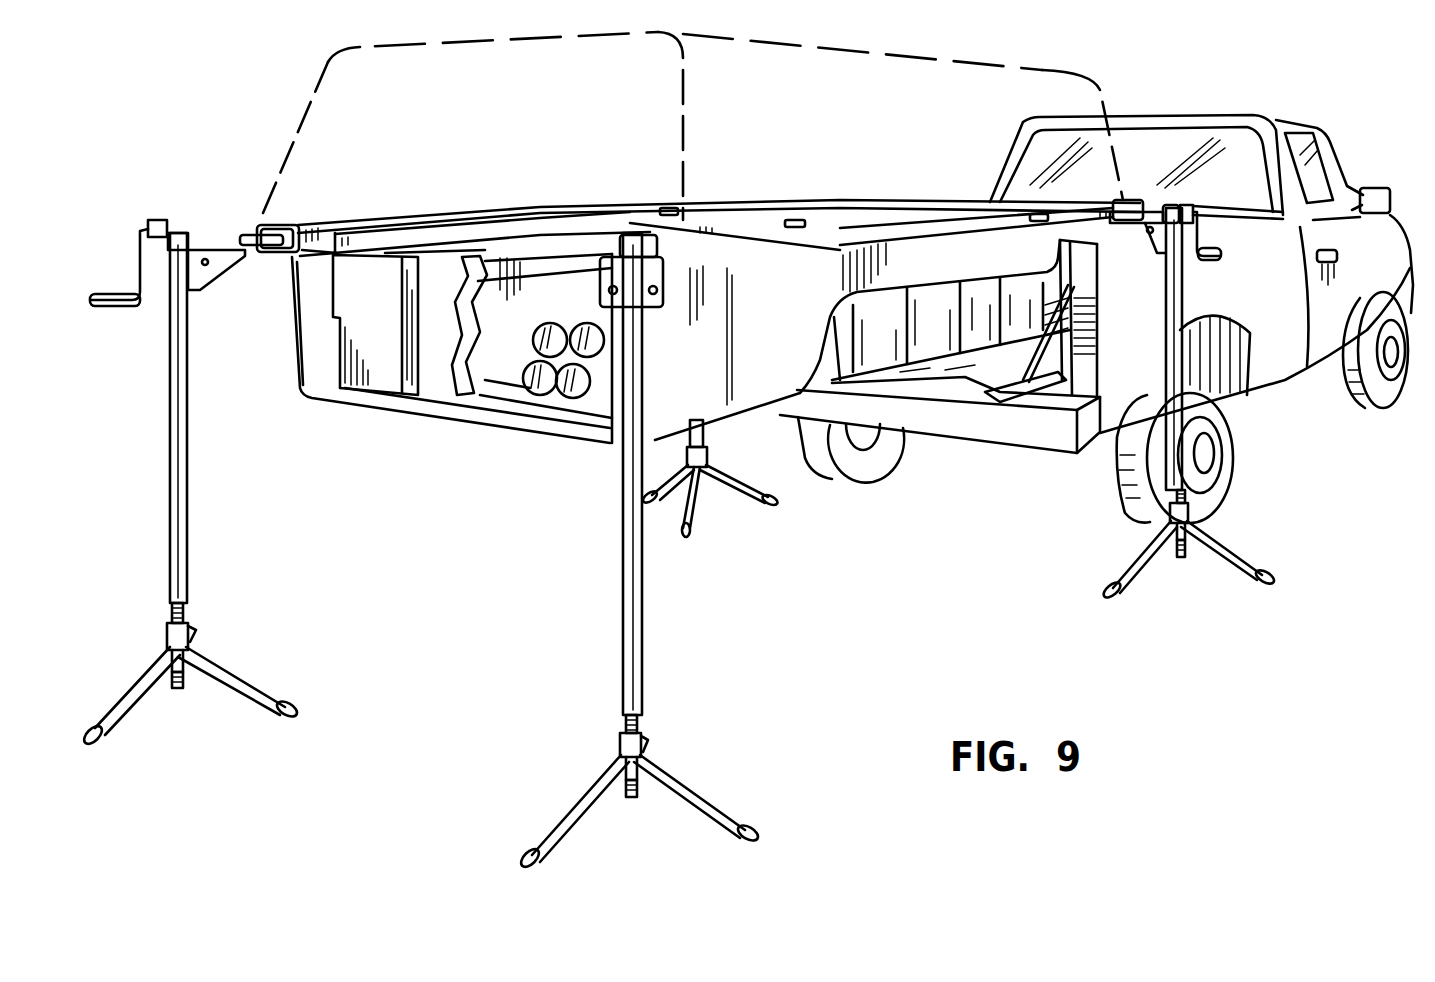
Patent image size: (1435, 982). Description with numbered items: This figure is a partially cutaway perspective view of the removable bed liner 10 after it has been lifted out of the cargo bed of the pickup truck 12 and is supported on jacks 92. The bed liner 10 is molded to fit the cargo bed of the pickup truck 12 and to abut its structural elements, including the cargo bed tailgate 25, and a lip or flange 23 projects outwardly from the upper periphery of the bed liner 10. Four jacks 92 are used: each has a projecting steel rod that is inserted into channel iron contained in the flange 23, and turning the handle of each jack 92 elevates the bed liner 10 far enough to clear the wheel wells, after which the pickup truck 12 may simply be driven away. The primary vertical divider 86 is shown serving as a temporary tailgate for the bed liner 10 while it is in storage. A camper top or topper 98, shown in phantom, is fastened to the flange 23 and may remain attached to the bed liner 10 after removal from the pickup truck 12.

The removable bed liner 10 is at (478, 458).
The pickup truck 12 is at (1310, 418).
The lip or flange 23 is at (331, 222).
The cargo bed tailgate 25 is at (975, 378).
The primary vertical divider 86 is at (385, 380).
The jacks 92 is at (190, 557).
The camper top or topper 98 is at (320, 84).